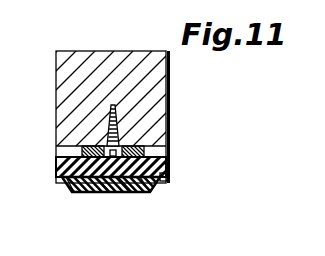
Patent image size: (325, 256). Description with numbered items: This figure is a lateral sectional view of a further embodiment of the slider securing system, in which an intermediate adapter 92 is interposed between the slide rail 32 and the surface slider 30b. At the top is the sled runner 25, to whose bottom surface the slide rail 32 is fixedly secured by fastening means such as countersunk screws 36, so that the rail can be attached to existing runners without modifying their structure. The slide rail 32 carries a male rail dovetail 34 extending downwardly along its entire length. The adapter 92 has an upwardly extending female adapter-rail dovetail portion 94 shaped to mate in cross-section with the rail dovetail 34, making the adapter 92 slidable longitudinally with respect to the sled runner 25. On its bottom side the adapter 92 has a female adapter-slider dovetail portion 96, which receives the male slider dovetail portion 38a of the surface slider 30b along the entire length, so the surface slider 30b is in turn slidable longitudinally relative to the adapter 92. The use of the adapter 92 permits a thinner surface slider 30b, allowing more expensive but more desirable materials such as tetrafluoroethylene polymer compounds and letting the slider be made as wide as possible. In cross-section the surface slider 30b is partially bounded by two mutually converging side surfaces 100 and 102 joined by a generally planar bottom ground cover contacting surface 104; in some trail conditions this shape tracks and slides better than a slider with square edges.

The sled runner 25 is at (102, 45).
The countersunk screws 36 is at (117, 112).
The slide rail 32 is at (142, 130).
The rail dovetail 34 is at (153, 144).
The intermediate adapter 92 is at (180, 158).
The adapter-slider dovetail portion 96 is at (168, 172).
The side surface 102 is at (150, 191).
The side surface 100 is at (74, 188).
The adapter-rail dovetail portion 94 is at (82, 194).
The slider dovetail portion 38a is at (104, 193).
The bottom ground cover contacting surface 104 is at (125, 193).
The surface slider 30b is at (144, 200).